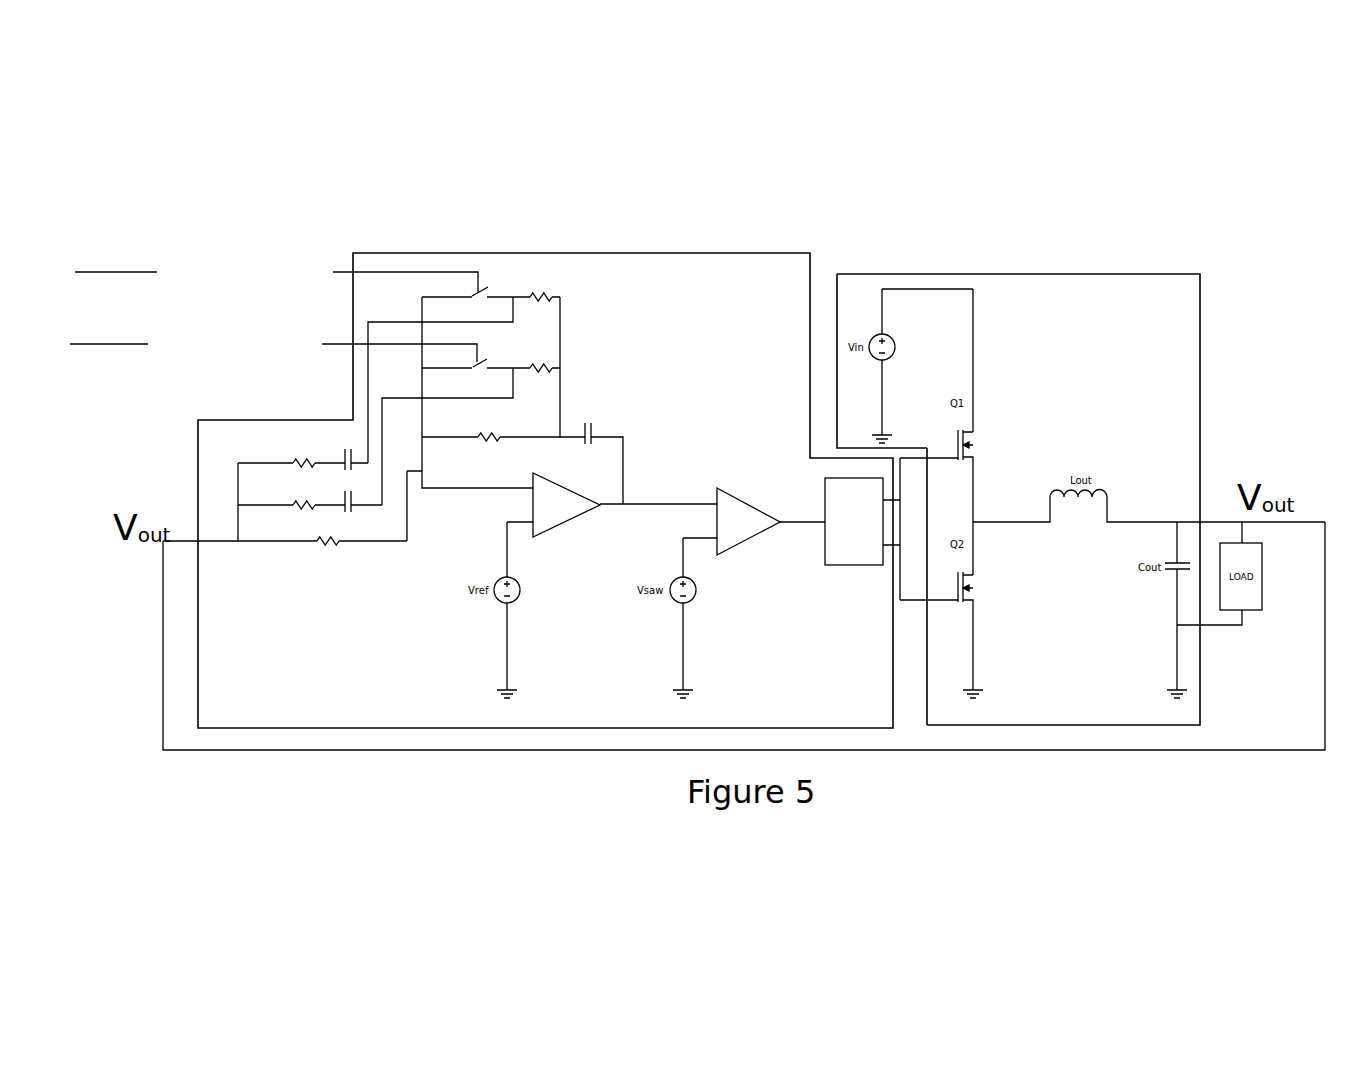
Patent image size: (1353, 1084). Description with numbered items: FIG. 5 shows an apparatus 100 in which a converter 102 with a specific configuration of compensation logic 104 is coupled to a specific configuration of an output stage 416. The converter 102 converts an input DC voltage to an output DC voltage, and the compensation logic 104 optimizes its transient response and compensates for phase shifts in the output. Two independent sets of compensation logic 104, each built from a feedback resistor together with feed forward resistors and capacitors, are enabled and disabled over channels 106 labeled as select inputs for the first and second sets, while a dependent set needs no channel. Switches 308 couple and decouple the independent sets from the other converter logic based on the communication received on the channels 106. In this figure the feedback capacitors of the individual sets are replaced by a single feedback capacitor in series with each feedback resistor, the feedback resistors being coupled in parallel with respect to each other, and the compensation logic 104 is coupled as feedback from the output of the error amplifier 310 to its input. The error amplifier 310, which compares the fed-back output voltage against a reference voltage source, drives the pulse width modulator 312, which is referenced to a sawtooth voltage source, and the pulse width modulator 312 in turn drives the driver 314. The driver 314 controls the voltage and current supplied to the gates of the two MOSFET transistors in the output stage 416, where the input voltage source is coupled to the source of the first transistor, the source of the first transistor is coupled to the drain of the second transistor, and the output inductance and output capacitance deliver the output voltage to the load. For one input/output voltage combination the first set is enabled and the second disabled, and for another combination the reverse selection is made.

The apparatus 100 is at (651, 228).
The converter 102 is at (200, 420).
The compensation logic 104 is at (588, 272).
The channel 106 is at (113, 337).
The switches 308 is at (497, 282).
The error amplifier 310 is at (573, 517).
The pulse width modulator 312 is at (734, 503).
The driver 314 is at (853, 543).
The output stage 416 is at (925, 728).